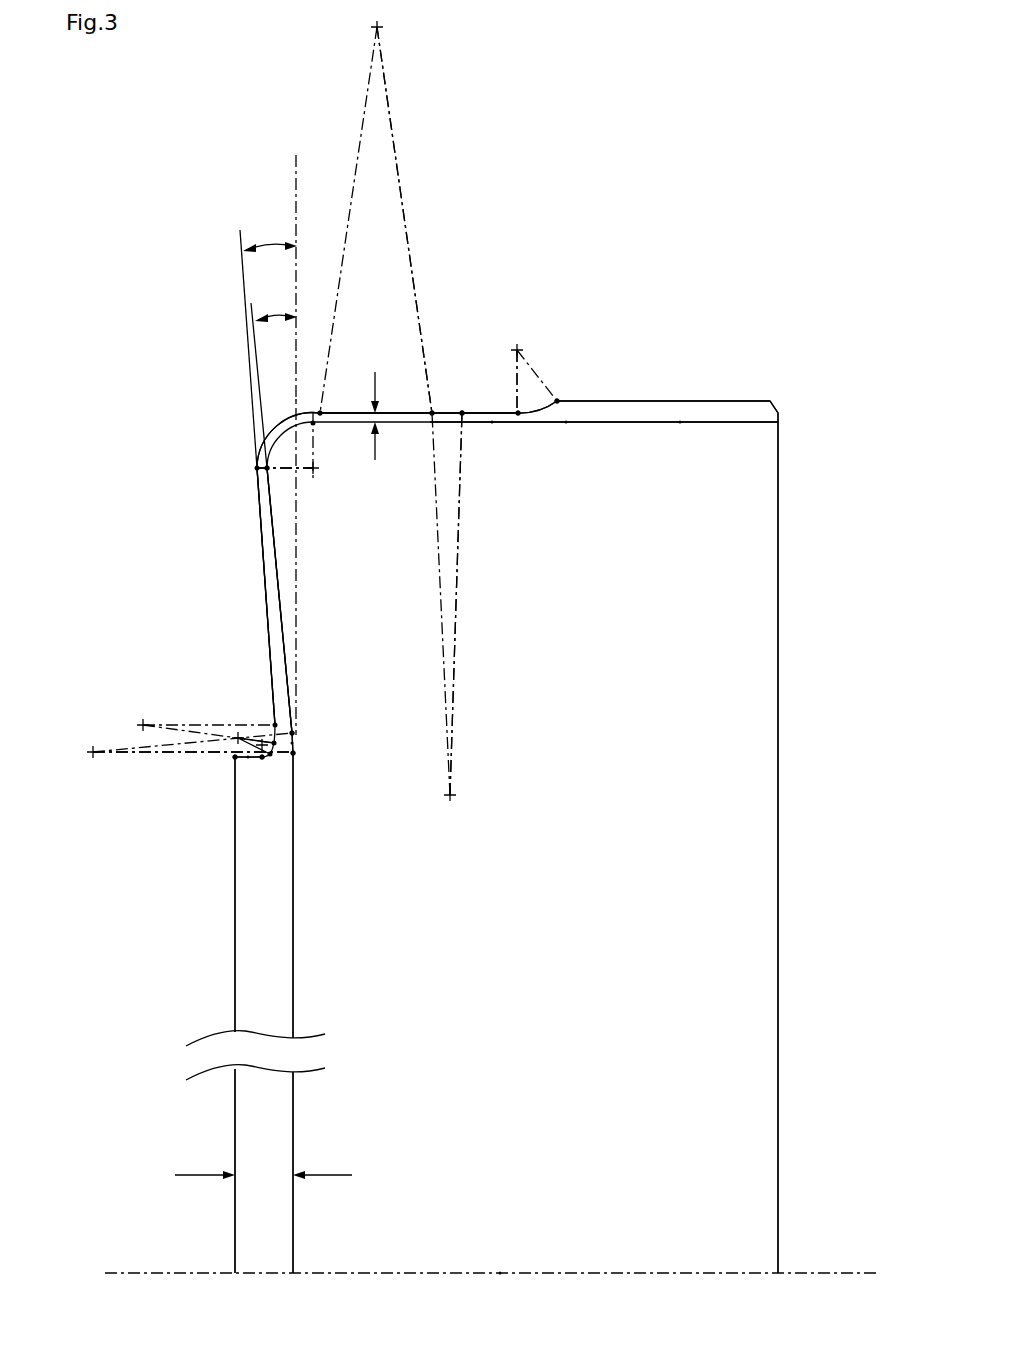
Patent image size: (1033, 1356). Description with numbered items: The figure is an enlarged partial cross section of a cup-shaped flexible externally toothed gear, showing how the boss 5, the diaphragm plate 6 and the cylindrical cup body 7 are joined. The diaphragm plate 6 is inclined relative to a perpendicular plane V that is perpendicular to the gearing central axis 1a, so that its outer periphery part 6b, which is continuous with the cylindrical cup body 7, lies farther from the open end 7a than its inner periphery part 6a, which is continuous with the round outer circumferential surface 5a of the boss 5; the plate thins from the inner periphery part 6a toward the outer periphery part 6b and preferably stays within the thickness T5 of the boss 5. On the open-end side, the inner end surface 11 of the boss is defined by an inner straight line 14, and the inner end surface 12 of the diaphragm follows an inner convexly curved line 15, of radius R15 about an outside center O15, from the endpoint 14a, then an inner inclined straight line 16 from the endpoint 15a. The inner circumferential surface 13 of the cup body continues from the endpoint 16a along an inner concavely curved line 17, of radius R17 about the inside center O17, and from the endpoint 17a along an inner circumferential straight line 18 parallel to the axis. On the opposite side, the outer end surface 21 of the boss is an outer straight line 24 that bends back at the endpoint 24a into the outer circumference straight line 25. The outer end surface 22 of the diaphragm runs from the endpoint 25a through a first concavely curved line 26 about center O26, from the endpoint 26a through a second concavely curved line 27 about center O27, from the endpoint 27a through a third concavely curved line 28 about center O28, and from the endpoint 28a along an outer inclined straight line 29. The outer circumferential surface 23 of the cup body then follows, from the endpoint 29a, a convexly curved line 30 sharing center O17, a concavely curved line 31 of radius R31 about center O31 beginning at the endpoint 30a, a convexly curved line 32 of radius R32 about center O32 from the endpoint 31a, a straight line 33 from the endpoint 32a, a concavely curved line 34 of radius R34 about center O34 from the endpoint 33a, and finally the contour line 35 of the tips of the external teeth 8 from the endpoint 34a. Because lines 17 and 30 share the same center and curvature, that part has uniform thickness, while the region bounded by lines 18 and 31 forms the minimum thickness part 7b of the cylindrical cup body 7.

The gearing central axis 1a is at (848, 1270).
The boss 5 is at (222, 1105).
The round outer circumferential surface of the boss 5a is at (250, 759).
The diaphragm plate 6 is at (228, 605).
The inner periphery part of the diaphragm 6a is at (291, 746).
The outer periphery part of the diaphragm 6b is at (266, 469).
The cylindrical cup body 7 is at (496, 298).
The open end of the cylindrical cup body 7a is at (778, 418).
The minimum thickness part of the cylindrical cup body 7b is at (387, 401).
The external teeth 8 is at (680, 436).
The inner end surface of the boss 11 is at (307, 977).
The inner end surface of the diaphragm 12 is at (296, 622).
The inner circumferential surface of the cylindrical cup body 13 is at (566, 436).
The inner straight line 14 is at (294, 922).
The endpoint of the inner straight line 14a is at (295, 754).
The inner convexly curved line 15 is at (295, 740).
The endpoint of the inner convexly curved line 15a is at (293, 732).
The inner inclined straight line 16 is at (279, 583).
The endpoint of the inner inclined straight line 16a is at (285, 516).
The inner concavely curved line 17 is at (325, 459).
The endpoint of the inner concavely curved line 17a is at (314, 425).
The inner circumferential straight line 18 is at (492, 424).
The outer end surface of the boss 21 is at (222, 976).
The outer end surface of the diaphragm 22 is at (247, 550).
The outer circumferential surface of the cylindrical cup body 23 is at (407, 399).
The outer straight line 24 is at (235, 935).
The endpoint of the outer straight line 24a is at (236, 760).
The outer circumference straight line 25 is at (248, 757).
The endpoint of the outer circumference straight line 25a is at (262, 760).
The first concavely curved line 26 is at (268, 758).
The endpoint of the first concavely curved line 26a is at (271, 756).
The second concavely curved line 27 is at (271, 748).
The endpoint of the second concavely curved line 27a is at (273, 742).
The third concavely curved line 28 is at (272, 736).
The endpoint of the third concavely curved line 28a is at (275, 724).
The outer inclined straight line 29 is at (265, 581).
The endpoint of the outer inclined straight line 29a is at (256, 468).
The convexly curved line 30 is at (258, 418).
The endpoint of the convexly curved line 30a is at (320, 411).
The concavely curved line 31 is at (358, 411).
The endpoint of the concavely curved line 31a is at (432, 411).
The convexly curved line 32 is at (450, 411).
The endpoint of the convexly curved line 32a is at (462, 411).
The straight line 33 is at (490, 411).
The endpoint of the straight line 33a is at (520, 411).
The concavely curved line 34 is at (536, 407).
The endpoint of the concavely curved line 34a is at (558, 401).
The contour line of the tips of the external teeth 35 is at (680, 400).
The center of the inner convexly curved line O15 is at (174, 743).
The center of the inner concavely curved line O17 is at (305, 457).
The center of the first concavely curved line O26 is at (258, 748).
The center of the second concavely curved line O27 is at (236, 742).
The center of the third concavely curved line O28 is at (189, 720).
The center of concavely curved line 31 O31 is at (376, 215).
The center of convexly curved line 32 O32 is at (469, 625).
The center of concavely curved line 34 O34 is at (534, 370).
The radius of curvature of the inner convexly curved line R15 is at (193, 770).
The radius of curvature of the inner concavely curved line R17 is at (285, 485).
The radius of curvature of concavely curved line 31 R31 is at (408, 220).
The radius of curvature of convexly curved line 32 R32 is at (474, 604).
The radius of curvature of concavely curved line 34 R34 is at (502, 381).
The thickness of the boss T5 is at (264, 1175).
The perpendicular plane V is at (297, 170).